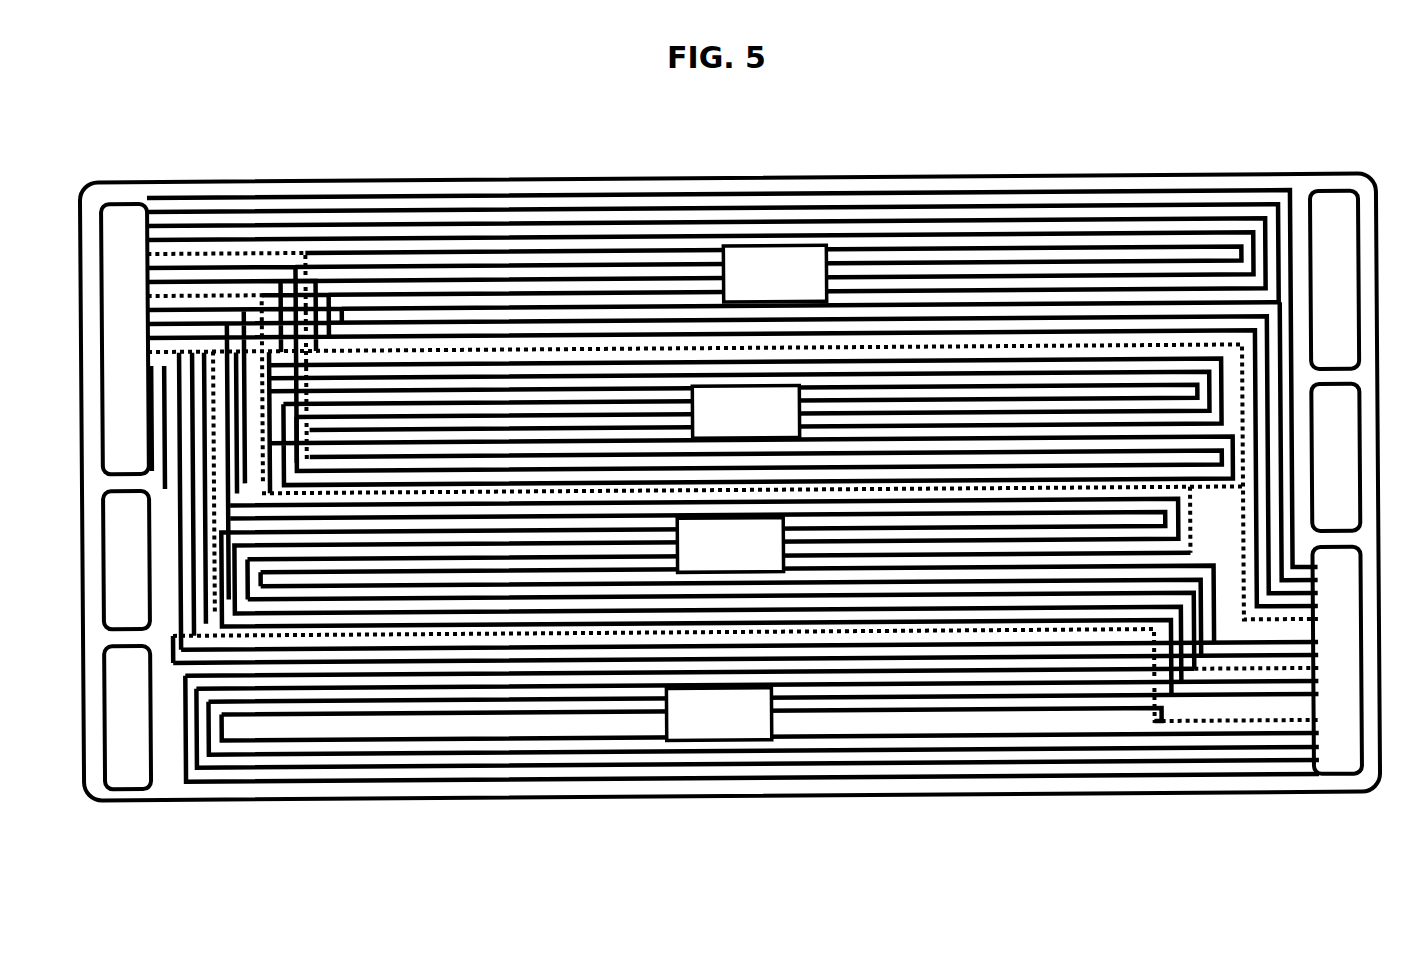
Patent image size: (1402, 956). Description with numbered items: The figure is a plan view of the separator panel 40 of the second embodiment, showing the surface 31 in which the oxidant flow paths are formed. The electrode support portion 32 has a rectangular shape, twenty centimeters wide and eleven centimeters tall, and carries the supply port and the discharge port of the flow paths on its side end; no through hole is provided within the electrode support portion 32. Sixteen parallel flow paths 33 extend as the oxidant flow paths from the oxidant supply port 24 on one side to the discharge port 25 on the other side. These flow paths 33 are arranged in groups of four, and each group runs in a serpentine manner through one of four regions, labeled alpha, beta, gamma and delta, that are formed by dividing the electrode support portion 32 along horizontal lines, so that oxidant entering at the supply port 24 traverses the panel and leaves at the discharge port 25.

The heater substrate assembly 40 is at (319, 800).
The surface 31 is at (462, 790).
The electrode support portion 32 is at (643, 768).
The parallel flow paths 33 is at (347, 223).
The oxidant supply port 24 is at (149, 348).
The discharge port 25 is at (1329, 724).